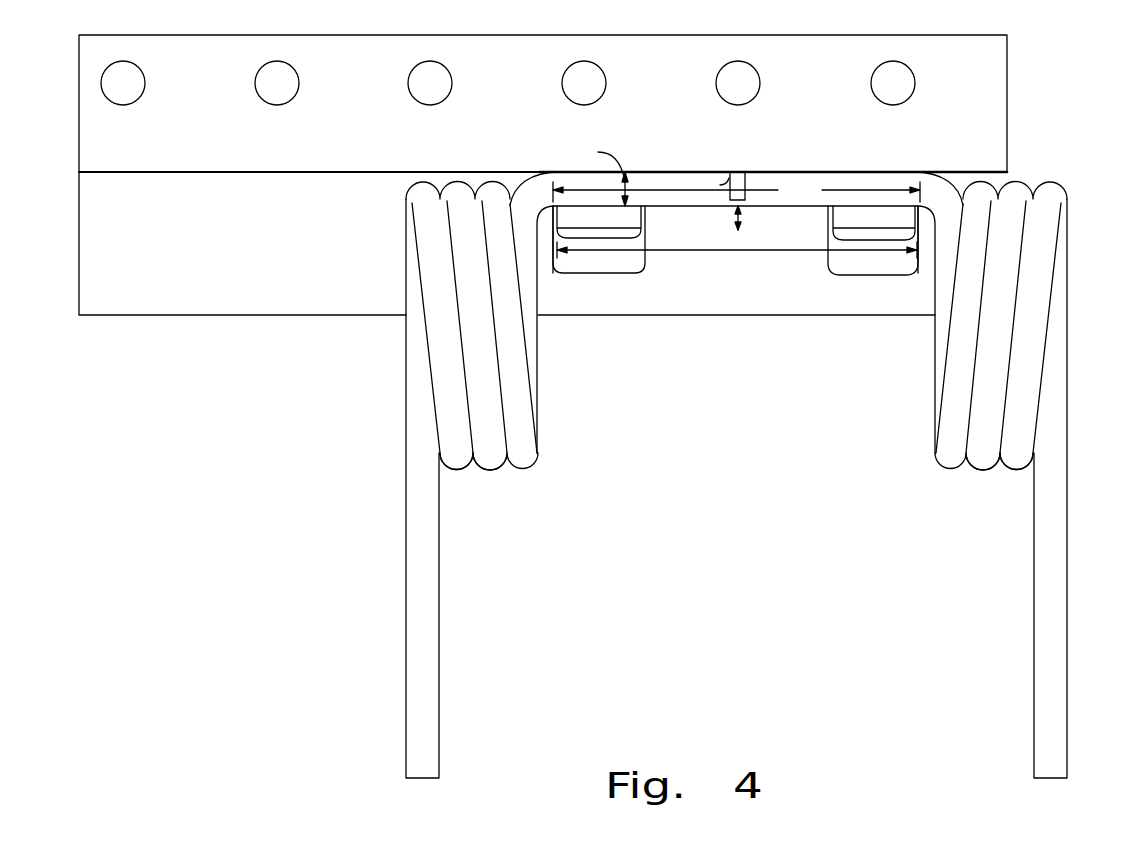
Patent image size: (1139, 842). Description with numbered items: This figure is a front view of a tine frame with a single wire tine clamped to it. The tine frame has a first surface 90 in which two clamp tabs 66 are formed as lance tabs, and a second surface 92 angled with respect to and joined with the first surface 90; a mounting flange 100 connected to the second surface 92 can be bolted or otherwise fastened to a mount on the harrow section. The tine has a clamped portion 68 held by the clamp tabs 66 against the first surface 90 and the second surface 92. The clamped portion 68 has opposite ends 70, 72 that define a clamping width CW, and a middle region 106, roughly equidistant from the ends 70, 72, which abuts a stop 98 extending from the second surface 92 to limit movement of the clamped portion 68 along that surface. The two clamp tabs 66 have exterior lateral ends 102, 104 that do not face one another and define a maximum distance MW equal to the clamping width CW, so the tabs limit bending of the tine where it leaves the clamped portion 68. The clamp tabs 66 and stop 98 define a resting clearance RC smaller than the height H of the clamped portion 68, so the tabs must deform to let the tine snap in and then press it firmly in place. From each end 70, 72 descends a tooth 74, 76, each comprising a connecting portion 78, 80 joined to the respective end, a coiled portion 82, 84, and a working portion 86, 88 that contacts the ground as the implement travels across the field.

The mounting flange 100 is at (990, 70).
The second surface 92 is at (983, 167).
The clamped portion 68 is at (688, 203).
The first surface 90 is at (713, 298).
The clamp tabs 66 is at (602, 237).
The stop 98 is at (738, 200).
The middle region 106 is at (722, 185).
The first end 70 is at (550, 190).
The second end 72 is at (927, 188).
The first connecting portion 78 is at (535, 342).
The second connecting portion 80 is at (940, 328).
The first working portion 86 is at (435, 558).
The second working portion 88 is at (1045, 635).
The first coiled portion 82 is at (492, 455).
The second coiled portion 84 is at (982, 455).
The first tooth 74 is at (475, 472).
The second tooth 76 is at (1012, 480).
The first exterior lateral end 102 is at (553, 232).
The second exterior lateral end 104 is at (828, 229).